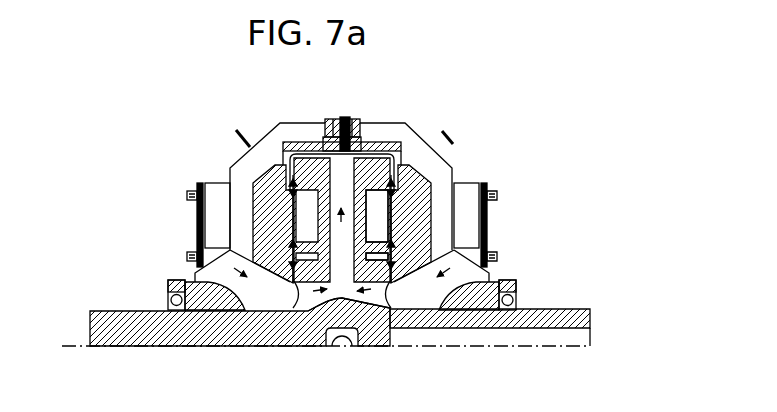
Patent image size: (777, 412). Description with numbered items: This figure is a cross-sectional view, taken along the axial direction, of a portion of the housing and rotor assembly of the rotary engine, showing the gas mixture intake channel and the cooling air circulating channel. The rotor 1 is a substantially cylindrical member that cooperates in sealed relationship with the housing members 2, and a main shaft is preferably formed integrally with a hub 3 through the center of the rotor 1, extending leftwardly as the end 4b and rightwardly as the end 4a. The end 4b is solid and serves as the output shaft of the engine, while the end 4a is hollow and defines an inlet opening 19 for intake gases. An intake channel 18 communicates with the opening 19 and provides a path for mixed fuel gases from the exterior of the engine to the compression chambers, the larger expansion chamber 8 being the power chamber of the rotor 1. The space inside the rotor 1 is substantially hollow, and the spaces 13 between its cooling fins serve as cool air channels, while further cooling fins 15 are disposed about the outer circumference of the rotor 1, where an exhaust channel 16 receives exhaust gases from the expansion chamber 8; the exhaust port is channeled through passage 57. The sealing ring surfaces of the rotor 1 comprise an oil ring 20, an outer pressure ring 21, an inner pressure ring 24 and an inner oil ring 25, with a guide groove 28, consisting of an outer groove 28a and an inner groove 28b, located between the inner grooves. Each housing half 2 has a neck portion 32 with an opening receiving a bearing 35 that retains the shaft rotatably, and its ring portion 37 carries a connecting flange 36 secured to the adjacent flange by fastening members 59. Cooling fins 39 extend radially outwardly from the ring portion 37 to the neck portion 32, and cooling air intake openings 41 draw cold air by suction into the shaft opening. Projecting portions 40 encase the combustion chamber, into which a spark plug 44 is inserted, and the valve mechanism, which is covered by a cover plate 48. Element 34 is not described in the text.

The rotor 1 is at (395, 165).
The housing members 2 is at (258, 134).
The hub 3 is at (314, 305).
The end of shaft 4a is at (563, 312).
The end of shaft 4b is at (126, 323).
The expansion chamber 8 is at (494, 187).
The cool air channels 13 is at (380, 305).
The cooling fins 15 is at (370, 163).
The exhaust channel 16 is at (338, 178).
The intake channel 18 is at (346, 349).
The opening 19 is at (580, 336).
The oil ring 20 is at (380, 211).
The outer pressure ring 21 is at (394, 190).
The inner pressure ring 24 is at (395, 256).
The inner oil ring 25 is at (499, 280).
The guide groove 28 is at (486, 275).
The outer groove 28a is at (246, 206).
The inner groove 28b is at (262, 236).
The neck portion 32 is at (201, 298).
The inlet wall 34 is at (190, 283).
The bearing 35 is at (168, 298).
The connecting flange 36 is at (350, 124).
The ring portion 37 is at (264, 204).
The cooling fins 39 is at (248, 168).
The projecting portions 40 is at (472, 230).
The cooling air intake openings 41 is at (197, 272).
The spark plug 44 is at (453, 145).
The cover plate 48 is at (489, 214).
The passage 57 is at (293, 190).
The fastening members 59 is at (316, 148).